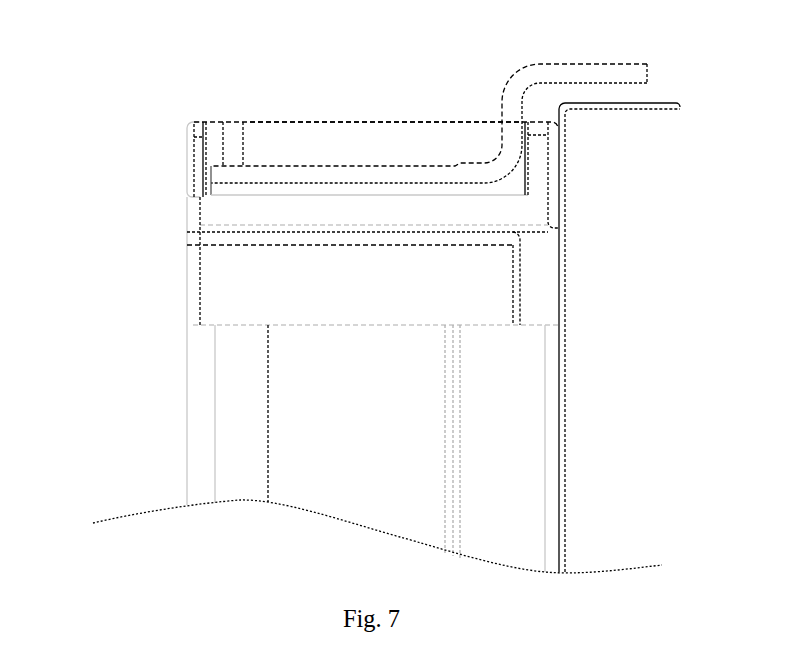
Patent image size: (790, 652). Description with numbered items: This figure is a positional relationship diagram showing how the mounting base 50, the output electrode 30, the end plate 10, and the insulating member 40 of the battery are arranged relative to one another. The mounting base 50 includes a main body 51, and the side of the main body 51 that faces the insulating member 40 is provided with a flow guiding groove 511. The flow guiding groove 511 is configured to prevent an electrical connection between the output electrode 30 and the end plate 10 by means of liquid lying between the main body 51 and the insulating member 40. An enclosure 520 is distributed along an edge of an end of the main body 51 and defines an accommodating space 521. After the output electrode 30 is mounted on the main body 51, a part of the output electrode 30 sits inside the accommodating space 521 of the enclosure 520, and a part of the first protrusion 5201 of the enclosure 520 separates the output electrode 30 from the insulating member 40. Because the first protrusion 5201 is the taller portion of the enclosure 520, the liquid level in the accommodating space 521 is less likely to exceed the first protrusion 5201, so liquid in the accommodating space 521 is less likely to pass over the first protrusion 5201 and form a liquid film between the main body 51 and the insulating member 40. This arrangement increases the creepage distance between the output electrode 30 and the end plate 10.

The end plate 10 is at (228, 400).
The output electrode 30 is at (557, 75).
The insulating member 40 is at (563, 410).
The mounting base 50 is at (351, 351).
The main body 51 is at (376, 261).
The flow guiding groove 511 is at (535, 280).
The enclosure 520 is at (382, 142).
The accommodating space 521 is at (334, 143).
The first protrusion 5201 is at (538, 160).